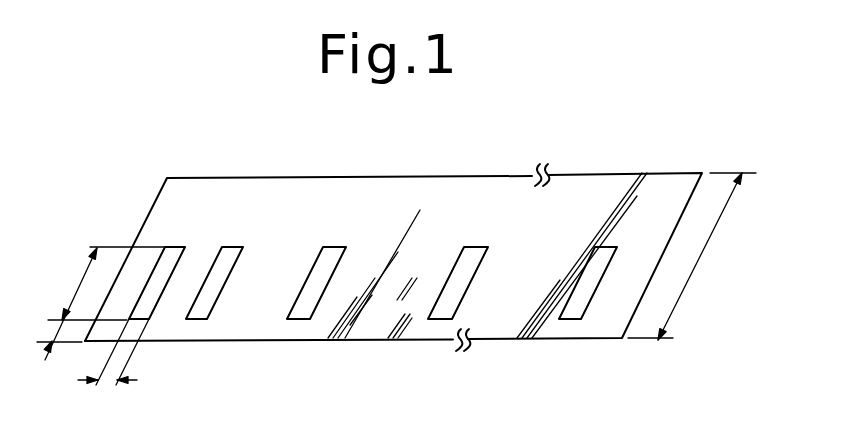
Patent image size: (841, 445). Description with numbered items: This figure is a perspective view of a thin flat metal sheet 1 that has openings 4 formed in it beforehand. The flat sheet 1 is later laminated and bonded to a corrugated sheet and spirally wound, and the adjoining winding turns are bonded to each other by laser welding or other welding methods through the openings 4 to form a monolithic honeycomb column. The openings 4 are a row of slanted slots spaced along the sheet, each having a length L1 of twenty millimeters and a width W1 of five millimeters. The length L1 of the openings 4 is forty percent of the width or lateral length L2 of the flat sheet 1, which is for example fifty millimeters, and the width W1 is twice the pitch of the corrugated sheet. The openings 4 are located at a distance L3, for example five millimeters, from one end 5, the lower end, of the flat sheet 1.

The thin flat metal sheet 1 is at (156, 199).
The openings 4 is at (200, 320).
The end of the flat sheet 5 is at (352, 340).
The length of the openings L1 is at (76, 293).
The width or lateral length of the flat sheet L2 is at (700, 260).
The distance from one end L3 is at (48, 334).
The width of the openings W1 is at (107, 384).